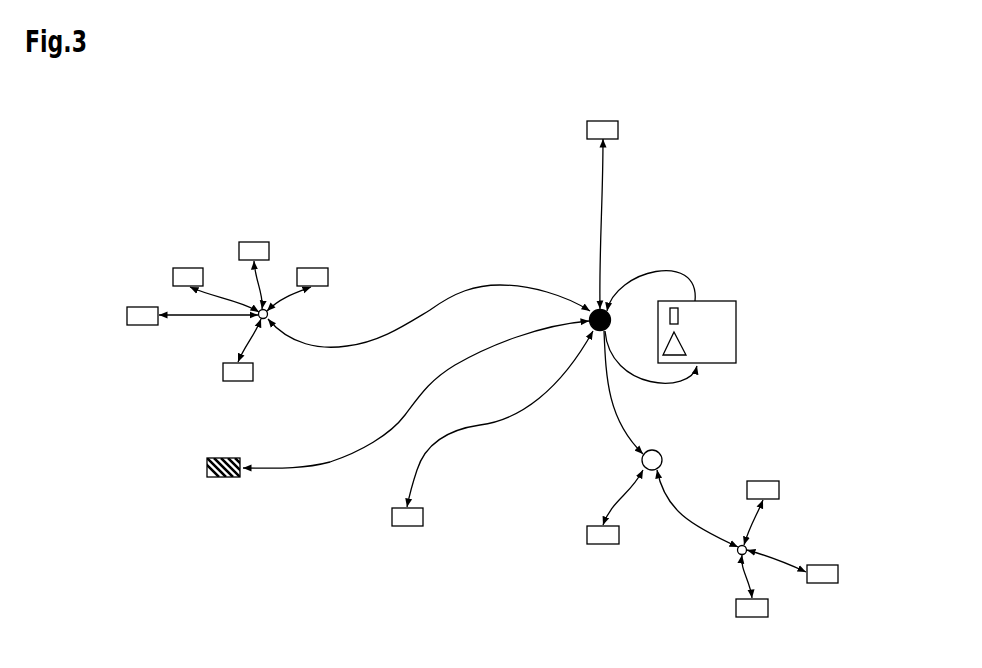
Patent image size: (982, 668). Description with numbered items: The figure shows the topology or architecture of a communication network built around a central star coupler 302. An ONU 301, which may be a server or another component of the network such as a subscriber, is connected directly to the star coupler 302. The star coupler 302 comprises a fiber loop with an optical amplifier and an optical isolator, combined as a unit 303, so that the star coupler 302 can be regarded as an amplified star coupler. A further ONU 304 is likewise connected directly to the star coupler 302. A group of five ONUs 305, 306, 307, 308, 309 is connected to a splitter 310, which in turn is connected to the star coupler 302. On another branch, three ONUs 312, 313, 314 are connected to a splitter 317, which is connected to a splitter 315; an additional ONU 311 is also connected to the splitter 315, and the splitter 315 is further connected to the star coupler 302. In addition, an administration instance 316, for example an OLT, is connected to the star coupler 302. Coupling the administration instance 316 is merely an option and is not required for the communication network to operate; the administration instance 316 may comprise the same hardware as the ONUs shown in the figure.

The ONU 301 is at (587, 130).
The star coupler 302 is at (595, 306).
The unit 303 is at (736, 352).
The ONU 304 is at (423, 518).
The ONU 305 is at (328, 276).
The ONU 306 is at (250, 242).
The ONU 307 is at (190, 268).
The ONU 308 is at (142, 307).
The ONU 309 is at (223, 372).
The splitter 310 is at (265, 320).
The ONU 311 is at (605, 544).
The ONU 312 is at (736, 608).
The ONU 313 is at (838, 573).
The ONU 314 is at (779, 490).
The splitter 315 is at (662, 460).
The administration instance 316 is at (227, 458).
The splitter 317 is at (737, 550).